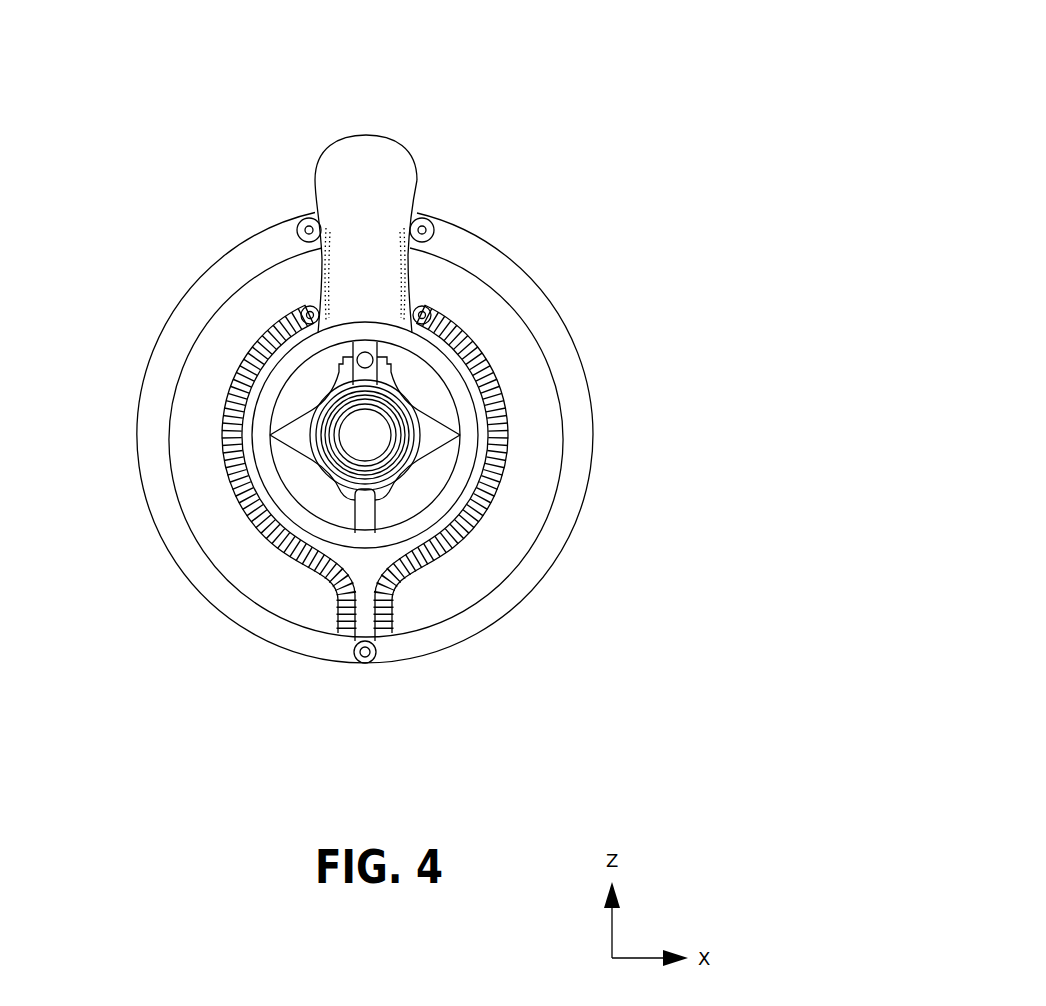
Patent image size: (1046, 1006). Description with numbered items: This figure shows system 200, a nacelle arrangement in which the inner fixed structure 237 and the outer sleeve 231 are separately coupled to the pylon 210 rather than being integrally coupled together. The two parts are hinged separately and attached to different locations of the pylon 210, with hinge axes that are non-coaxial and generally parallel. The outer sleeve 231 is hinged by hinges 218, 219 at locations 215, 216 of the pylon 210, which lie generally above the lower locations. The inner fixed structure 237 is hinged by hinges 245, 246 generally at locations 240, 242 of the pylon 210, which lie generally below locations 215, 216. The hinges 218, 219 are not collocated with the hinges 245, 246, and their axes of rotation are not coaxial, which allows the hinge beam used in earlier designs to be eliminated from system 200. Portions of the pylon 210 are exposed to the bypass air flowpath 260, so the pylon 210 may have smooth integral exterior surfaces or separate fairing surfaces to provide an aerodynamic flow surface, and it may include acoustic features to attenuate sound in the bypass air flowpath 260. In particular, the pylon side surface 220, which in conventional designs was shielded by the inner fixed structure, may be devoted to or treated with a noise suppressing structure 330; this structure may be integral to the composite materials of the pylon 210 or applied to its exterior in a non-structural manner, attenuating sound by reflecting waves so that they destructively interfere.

The system 200 is at (612, 80).
The pylon 210 is at (433, 220).
The location 215 is at (413, 218).
The location 216 is at (318, 217).
The hinge 218 is at (432, 225).
The hinge 219 is at (307, 224).
The side surface 220 is at (409, 287).
The outer sleeve 231 is at (570, 540).
The inner fixed structure 237 is at (457, 548).
The location 240 is at (415, 308).
The location 242 is at (303, 302).
The hinge 245 is at (300, 315).
The hinge 246 is at (433, 315).
The bypass air flowpath 260 is at (547, 460).
The noise suppressing structure 330 is at (410, 243).